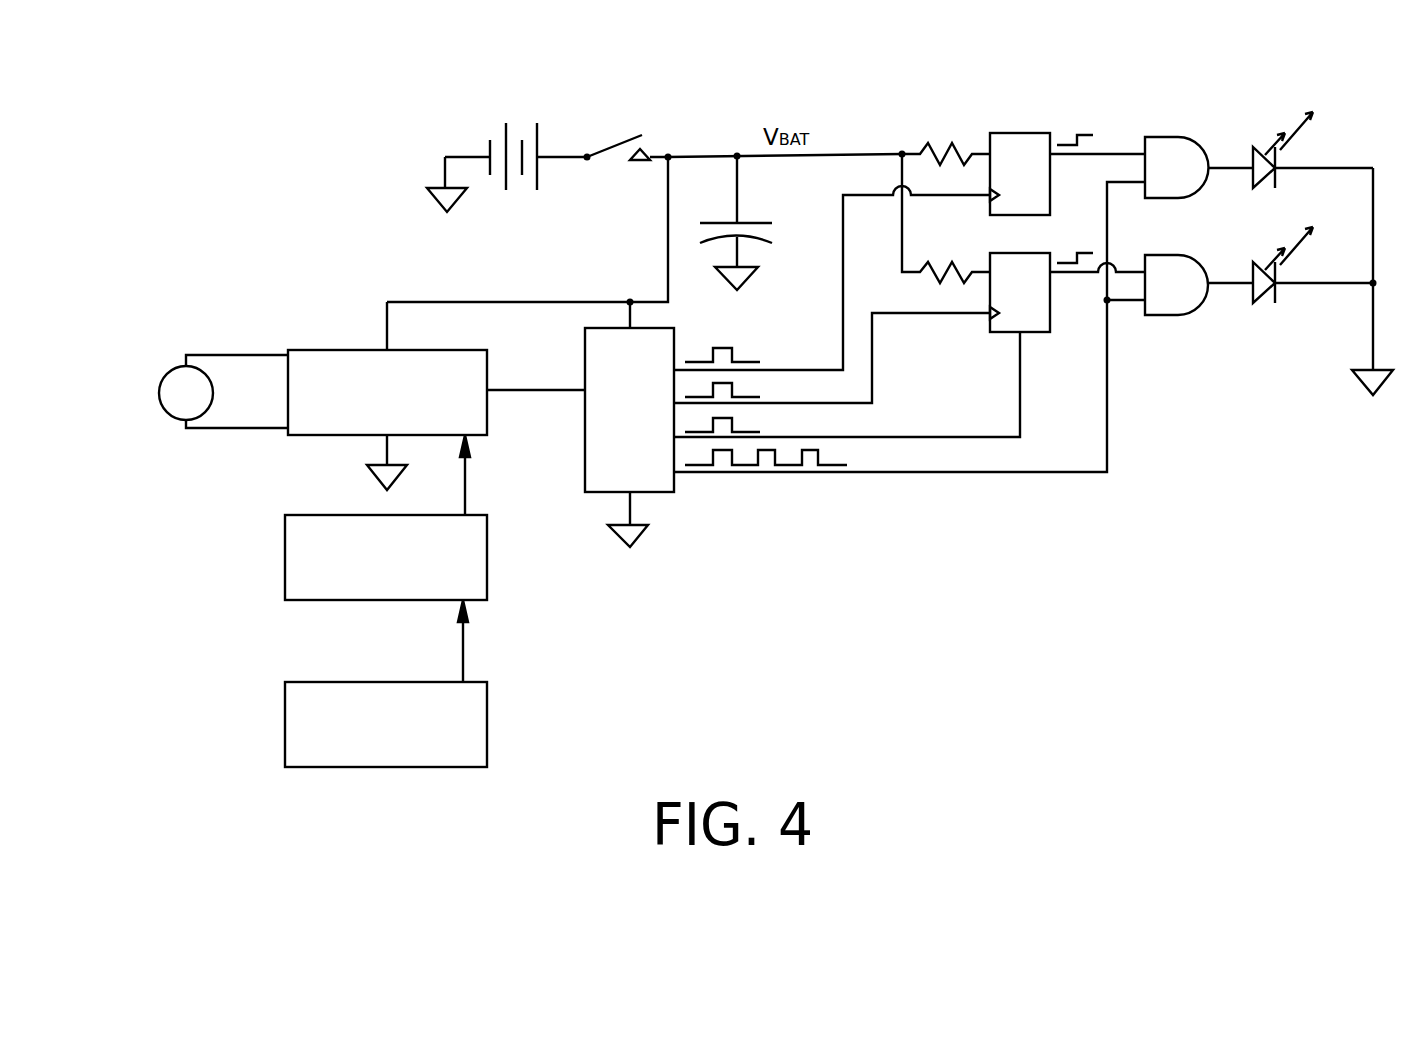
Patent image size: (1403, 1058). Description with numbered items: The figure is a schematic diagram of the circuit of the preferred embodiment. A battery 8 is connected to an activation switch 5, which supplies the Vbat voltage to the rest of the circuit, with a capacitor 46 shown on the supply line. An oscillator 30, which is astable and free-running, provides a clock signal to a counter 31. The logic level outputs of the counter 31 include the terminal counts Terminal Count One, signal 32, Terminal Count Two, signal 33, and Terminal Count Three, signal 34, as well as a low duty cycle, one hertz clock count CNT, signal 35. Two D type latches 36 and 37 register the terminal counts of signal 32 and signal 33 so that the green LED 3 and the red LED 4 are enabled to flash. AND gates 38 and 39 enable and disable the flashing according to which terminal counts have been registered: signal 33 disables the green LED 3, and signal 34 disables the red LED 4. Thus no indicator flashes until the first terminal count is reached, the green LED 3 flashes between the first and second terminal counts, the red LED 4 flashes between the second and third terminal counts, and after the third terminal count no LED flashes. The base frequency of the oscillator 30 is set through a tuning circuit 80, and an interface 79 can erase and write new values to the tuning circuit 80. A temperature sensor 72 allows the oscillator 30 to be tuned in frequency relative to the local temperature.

The green LED 3 is at (1262, 178).
The red LED 4 is at (1262, 296).
The activation switch 5 is at (615, 143).
The battery 8 is at (482, 143).
The oscillator 30 is at (333, 358).
The counter 31 is at (583, 424).
The TC1 signal 32 is at (842, 323).
The TC2 signal 33 is at (873, 367).
The TC3 signal 34 is at (1021, 400).
The CNT signal 35 is at (1108, 433).
The D type latch 36 is at (1041, 200).
The D type latch 37 is at (1041, 318).
The AND gate 38 is at (1167, 190).
The AND gate 39 is at (1167, 308).
The capacitor 46 is at (760, 222).
The temperature sensor 72 is at (162, 402).
The interface 79 is at (332, 688).
The tuning circuit 80 is at (333, 523).